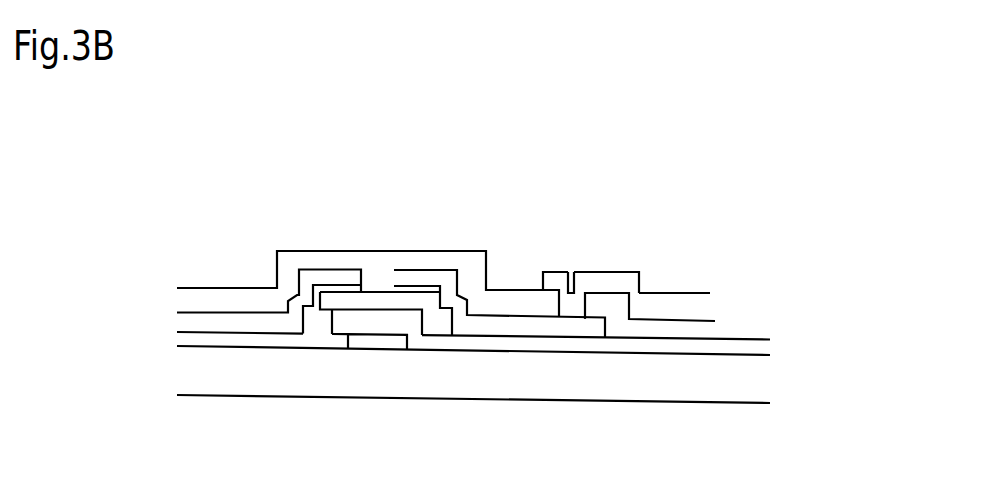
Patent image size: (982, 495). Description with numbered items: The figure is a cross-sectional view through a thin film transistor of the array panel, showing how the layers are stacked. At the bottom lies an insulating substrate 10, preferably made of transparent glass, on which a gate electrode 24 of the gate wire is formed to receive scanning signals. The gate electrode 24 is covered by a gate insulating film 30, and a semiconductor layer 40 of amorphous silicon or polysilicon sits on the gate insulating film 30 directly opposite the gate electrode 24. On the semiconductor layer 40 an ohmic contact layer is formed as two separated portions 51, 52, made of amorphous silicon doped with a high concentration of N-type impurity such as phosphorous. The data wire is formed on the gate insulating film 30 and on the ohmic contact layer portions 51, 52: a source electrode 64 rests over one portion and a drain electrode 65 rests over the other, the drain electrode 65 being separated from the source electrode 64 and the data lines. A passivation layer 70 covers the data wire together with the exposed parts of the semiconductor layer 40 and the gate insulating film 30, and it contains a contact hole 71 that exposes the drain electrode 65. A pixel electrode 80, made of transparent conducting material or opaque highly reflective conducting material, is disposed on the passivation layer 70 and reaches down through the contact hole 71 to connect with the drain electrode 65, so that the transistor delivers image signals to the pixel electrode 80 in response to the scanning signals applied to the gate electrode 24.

The insulating substrate 10 is at (348, 385).
The gate electrode 24 is at (373, 338).
The gate insulating film 30 is at (241, 338).
The semiconductor layer 40 is at (313, 327).
The ohmic contact layer portion 51 is at (348, 285).
The ohmic contact layer portion 52 is at (417, 288).
The source electrode 64 is at (222, 317).
The drain electrode 65 is at (522, 323).
The passivation layer 70 is at (321, 251).
The contact hole 71 is at (569, 272).
The pixel electrode 80 is at (612, 273).